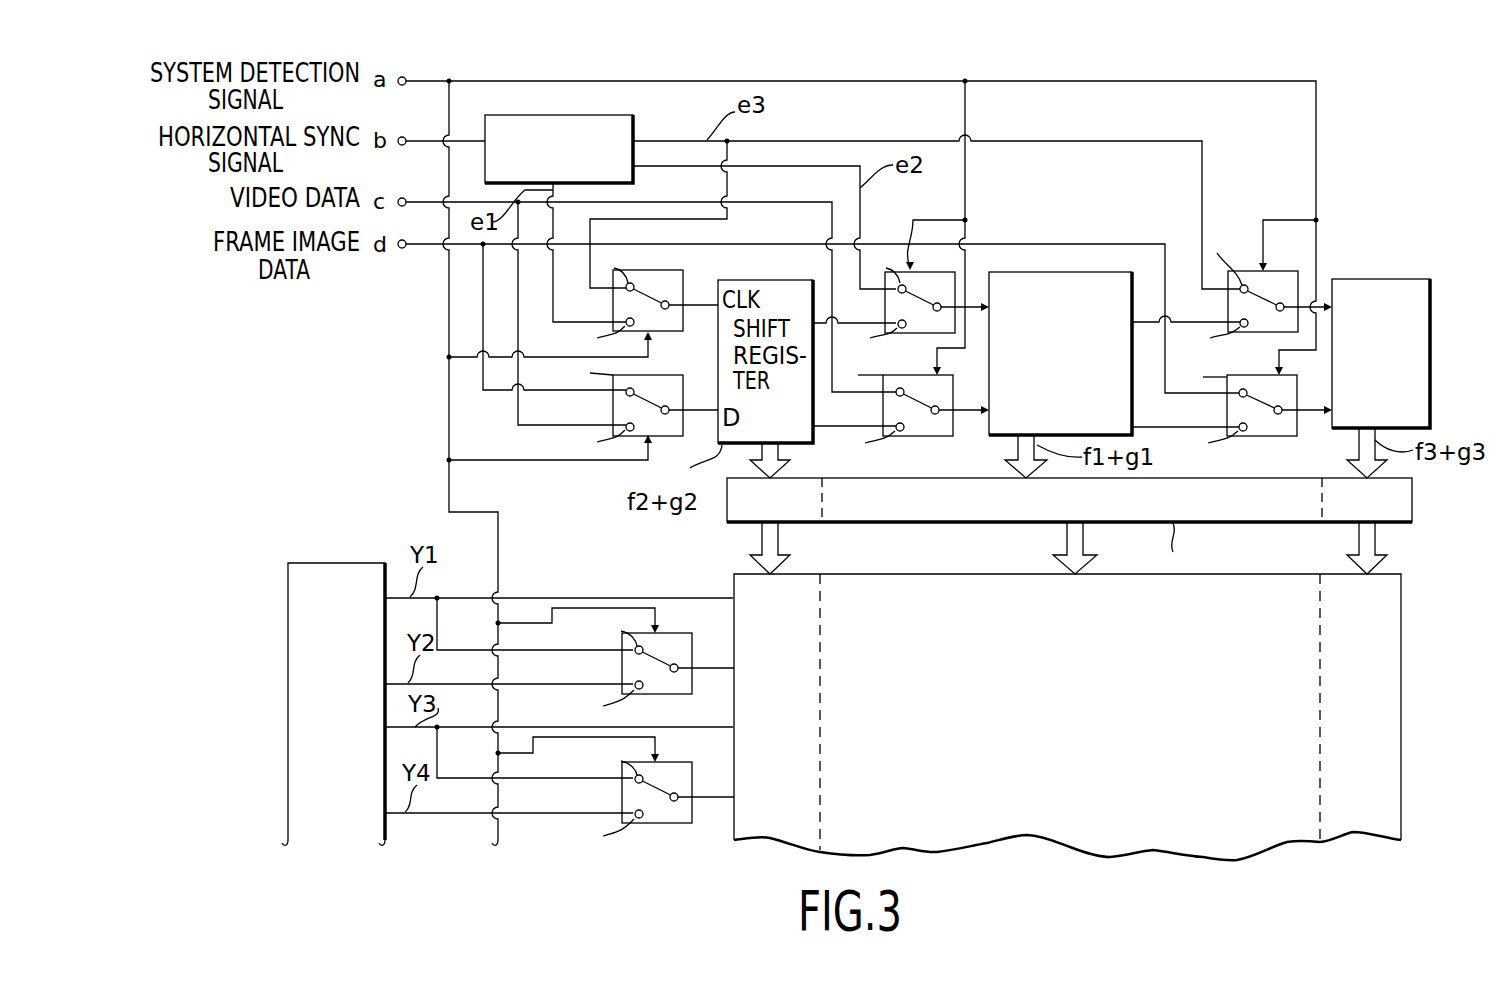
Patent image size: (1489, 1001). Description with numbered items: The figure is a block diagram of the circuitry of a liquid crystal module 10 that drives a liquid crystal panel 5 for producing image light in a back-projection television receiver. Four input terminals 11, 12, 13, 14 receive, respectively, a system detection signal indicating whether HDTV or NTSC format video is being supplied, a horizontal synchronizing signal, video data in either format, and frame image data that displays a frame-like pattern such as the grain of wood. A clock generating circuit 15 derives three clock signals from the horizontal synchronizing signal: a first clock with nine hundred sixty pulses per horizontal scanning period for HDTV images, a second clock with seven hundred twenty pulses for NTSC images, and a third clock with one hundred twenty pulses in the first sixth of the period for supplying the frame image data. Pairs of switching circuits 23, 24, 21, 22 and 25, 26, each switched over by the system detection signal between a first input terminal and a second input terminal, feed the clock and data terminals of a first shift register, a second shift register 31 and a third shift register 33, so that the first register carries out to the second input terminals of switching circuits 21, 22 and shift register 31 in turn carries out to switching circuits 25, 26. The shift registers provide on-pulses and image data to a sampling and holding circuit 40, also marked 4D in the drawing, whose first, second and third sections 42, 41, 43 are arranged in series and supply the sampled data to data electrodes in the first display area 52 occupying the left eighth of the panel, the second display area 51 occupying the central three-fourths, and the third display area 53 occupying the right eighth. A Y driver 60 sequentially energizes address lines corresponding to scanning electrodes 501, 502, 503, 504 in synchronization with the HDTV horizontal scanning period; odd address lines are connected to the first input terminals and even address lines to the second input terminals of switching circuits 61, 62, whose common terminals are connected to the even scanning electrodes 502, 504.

The liquid crystal module 10 is at (1362, 103).
The input terminal 11 is at (406, 78).
The input terminal 12 is at (406, 138).
The input terminal 13 is at (406, 199).
The input terminal 14 is at (404, 250).
The clock generating circuit 15 is at (633, 117).
The switching circuit 21 is at (940, 272).
The switching circuit 22 is at (920, 438).
The switching circuit 23 is at (663, 270).
The switching circuit 24 is at (660, 375).
The switching circuit 25 is at (1290, 271).
The switching circuit 26 is at (1267, 437).
The shift register 31 is at (1098, 272).
The shift register 33 is at (1397, 279).
The sampling and holding circuit 40 is at (727, 518).
The second section 41 is at (1195, 544).
The first section 42 is at (810, 523).
The third section 43 is at (1410, 523).
The sampling and holding circuit output 4D is at (912, 525).
The liquid crystal panel 5 is at (1416, 616).
The second display area 51 is at (1123, 853).
The first display area 52 is at (772, 842).
The third display area 53 is at (1365, 835).
The Y driver 60 is at (288, 678).
The switching circuit 61 is at (672, 633).
The switching circuit 62 is at (663, 826).
The scanning electrode 501 is at (633, 575).
The scanning electrode 502 is at (708, 665).
The scanning electrode 503 is at (722, 727).
The scanning electrode 504 is at (723, 796).